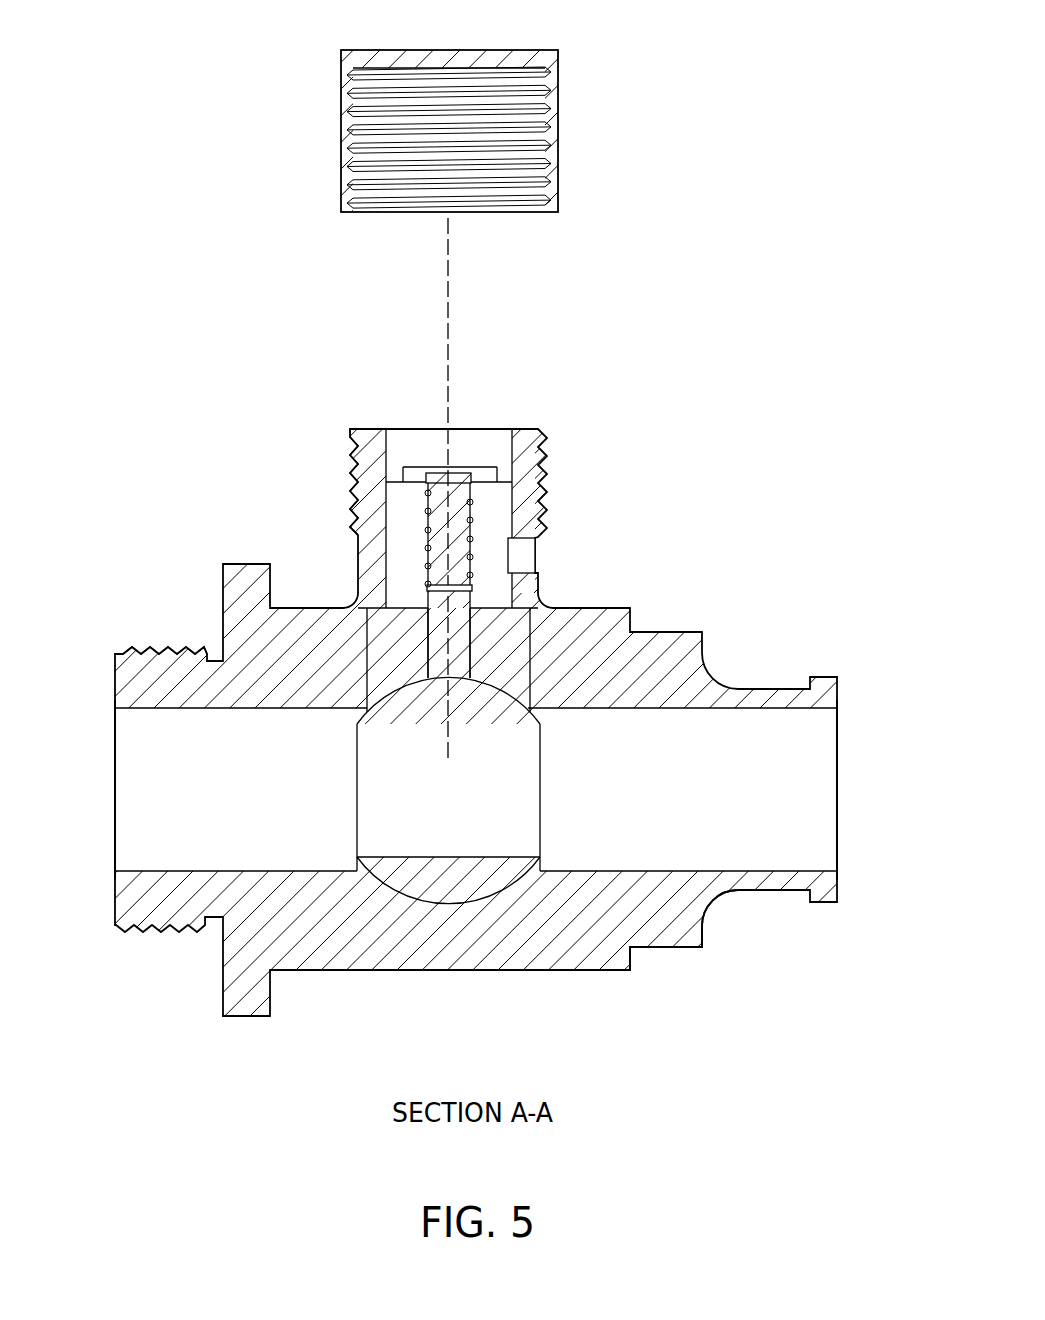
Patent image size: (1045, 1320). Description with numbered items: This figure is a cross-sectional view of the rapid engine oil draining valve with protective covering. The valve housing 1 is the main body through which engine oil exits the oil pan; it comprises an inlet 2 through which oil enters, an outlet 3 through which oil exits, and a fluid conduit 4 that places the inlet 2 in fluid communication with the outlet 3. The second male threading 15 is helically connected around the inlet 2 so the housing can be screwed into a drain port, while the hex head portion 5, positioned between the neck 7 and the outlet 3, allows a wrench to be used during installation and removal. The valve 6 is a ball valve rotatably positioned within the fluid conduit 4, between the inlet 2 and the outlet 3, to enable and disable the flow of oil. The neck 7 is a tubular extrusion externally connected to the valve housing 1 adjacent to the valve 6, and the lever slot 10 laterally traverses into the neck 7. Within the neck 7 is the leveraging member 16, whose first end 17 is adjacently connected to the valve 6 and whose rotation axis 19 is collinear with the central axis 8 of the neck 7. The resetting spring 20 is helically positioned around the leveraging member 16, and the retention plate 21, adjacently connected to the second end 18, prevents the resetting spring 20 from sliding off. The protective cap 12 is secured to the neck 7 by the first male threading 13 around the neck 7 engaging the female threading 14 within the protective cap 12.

The valve housing 1 is at (493, 982).
The inlet 2 is at (112, 762).
The outlet 3 is at (840, 785).
The fluid conduit 4 is at (157, 814).
The hex head portion 5 is at (693, 940).
The valve 6 is at (540, 780).
The neck 7 is at (367, 563).
The central axis 8 is at (450, 348).
The lever slot 10 is at (518, 557).
The protective cap 12 is at (537, 51).
The first male threading 13 is at (357, 505).
The female threading 14 is at (410, 200).
The second male threading 15 is at (135, 652).
The leveraging member 16 is at (470, 638).
The first end 17 is at (424, 675).
The second end 18 is at (427, 483).
The rotation axis 19 is at (452, 745).
The resetting spring 20 is at (427, 535).
The retention plate 21 is at (471, 481).